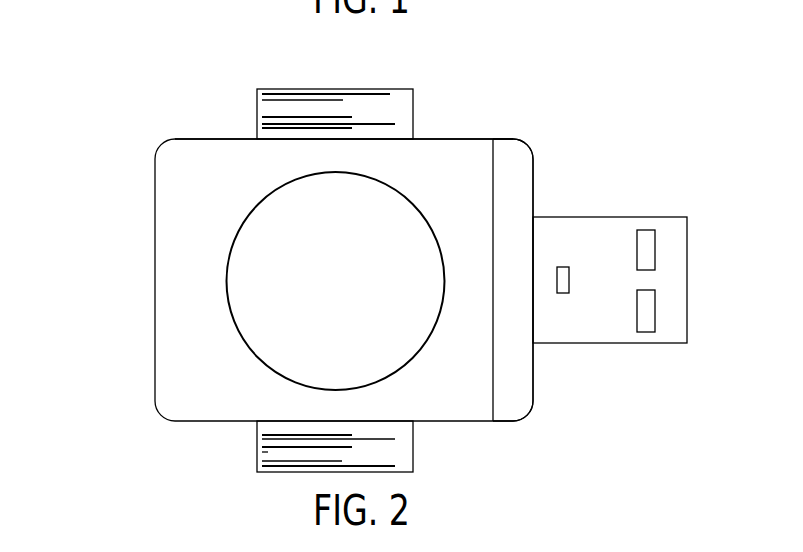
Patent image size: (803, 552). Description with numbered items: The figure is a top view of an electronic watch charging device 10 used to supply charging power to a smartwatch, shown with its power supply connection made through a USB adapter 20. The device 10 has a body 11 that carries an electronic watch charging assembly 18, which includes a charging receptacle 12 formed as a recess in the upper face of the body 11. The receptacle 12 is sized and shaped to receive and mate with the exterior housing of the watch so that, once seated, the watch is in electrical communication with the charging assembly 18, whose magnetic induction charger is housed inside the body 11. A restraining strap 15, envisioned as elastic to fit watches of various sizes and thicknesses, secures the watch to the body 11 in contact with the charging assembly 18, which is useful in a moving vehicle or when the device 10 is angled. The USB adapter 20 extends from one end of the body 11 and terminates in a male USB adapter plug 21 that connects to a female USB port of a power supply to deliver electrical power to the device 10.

The electronic watch charging device 10 is at (131, 290).
The body 11 is at (477, 137).
The charging receptacle 12 is at (293, 195).
The restraining strap 15 is at (392, 107).
The electronic watch charging assembly 18 is at (251, 252).
The USB adapter 20 is at (534, 154).
The male USB adapter plug 21 is at (687, 217).